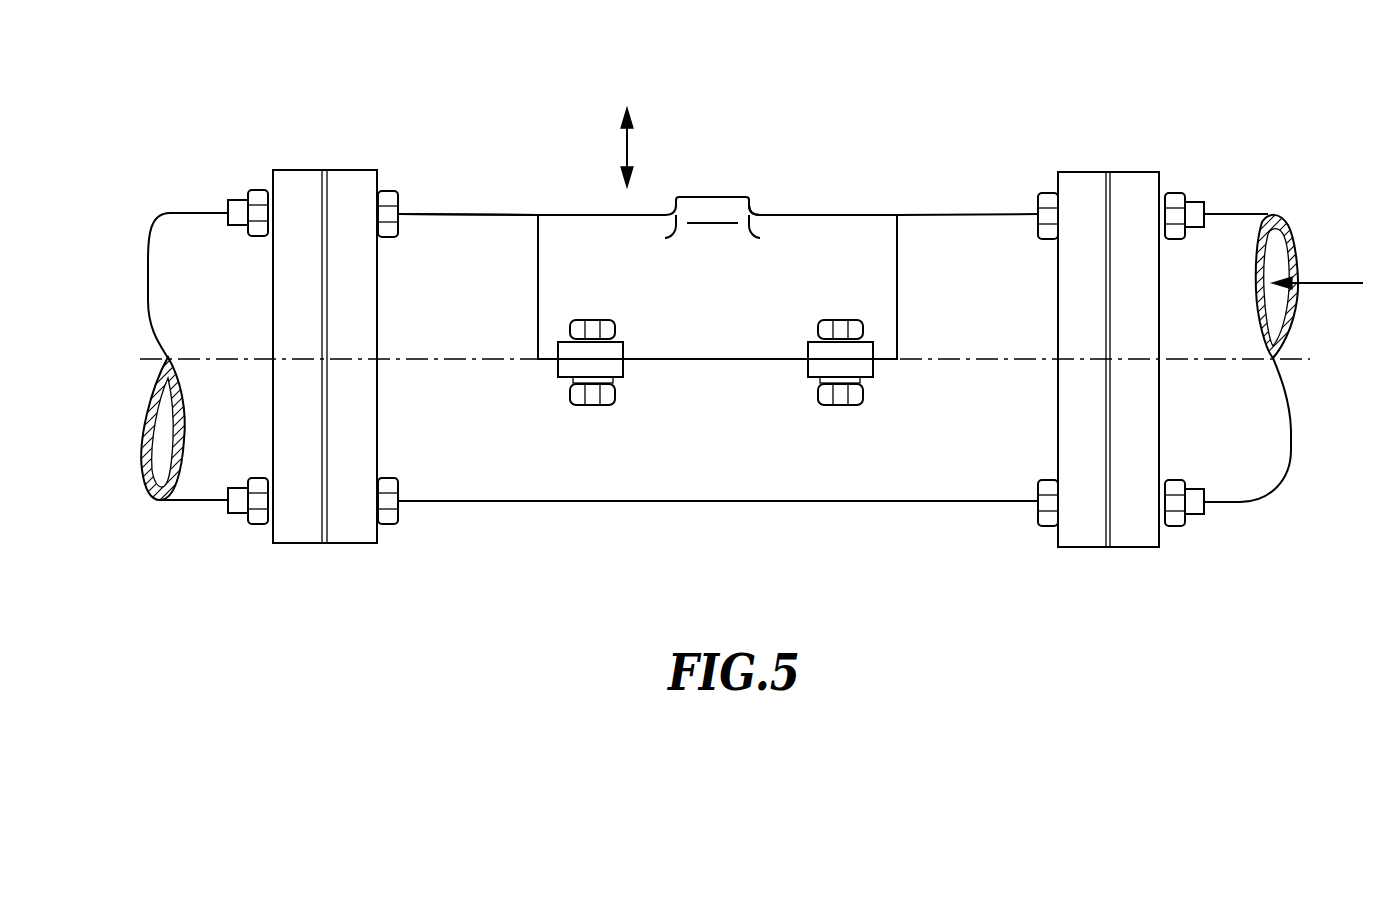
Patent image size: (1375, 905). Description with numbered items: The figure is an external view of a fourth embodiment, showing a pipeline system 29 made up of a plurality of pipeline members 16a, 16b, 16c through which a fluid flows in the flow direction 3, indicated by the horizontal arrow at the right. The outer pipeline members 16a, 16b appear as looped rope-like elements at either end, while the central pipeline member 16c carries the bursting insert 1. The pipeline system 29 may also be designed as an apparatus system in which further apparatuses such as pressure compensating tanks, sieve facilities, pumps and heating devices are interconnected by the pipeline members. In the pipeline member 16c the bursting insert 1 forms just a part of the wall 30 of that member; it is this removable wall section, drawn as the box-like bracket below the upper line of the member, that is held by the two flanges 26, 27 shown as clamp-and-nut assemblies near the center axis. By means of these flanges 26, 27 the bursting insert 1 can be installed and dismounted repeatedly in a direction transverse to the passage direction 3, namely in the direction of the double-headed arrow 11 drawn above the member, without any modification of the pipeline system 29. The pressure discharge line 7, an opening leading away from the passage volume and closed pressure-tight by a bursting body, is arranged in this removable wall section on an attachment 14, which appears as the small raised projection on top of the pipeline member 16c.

The bursting insert 1 is at (888, 150).
The flow direction 3 is at (1335, 283).
The pressure discharge line 7 is at (725, 180).
The double-headed arrow 11 is at (625, 147).
The attachment 14 is at (770, 185).
The pipeline member 16a is at (192, 238).
The pipeline member 16b is at (1232, 238).
The pipeline member 16c is at (448, 238).
The flange 26 is at (616, 367).
The flange 27 is at (817, 368).
The pipeline system 29 is at (1105, 125).
The wall 30 is at (1000, 310).